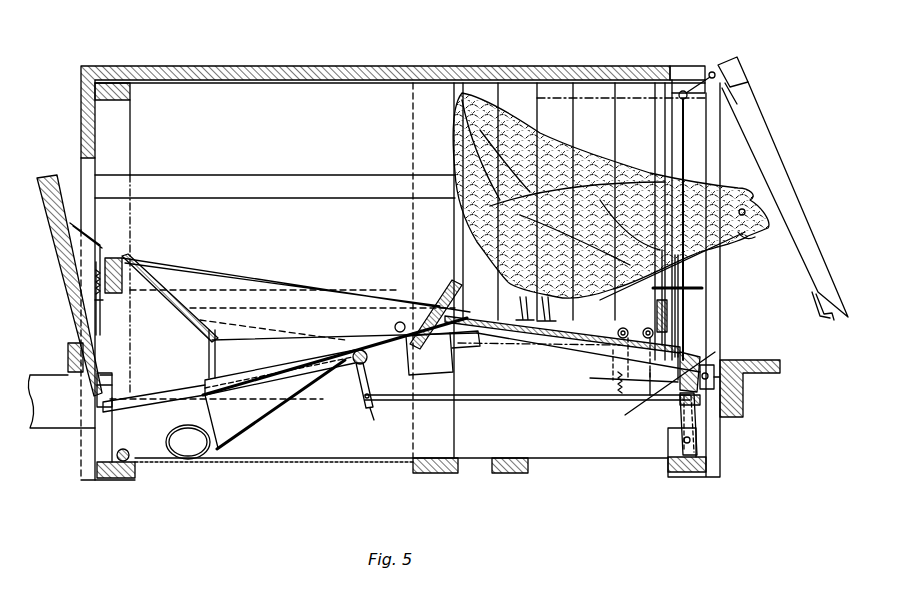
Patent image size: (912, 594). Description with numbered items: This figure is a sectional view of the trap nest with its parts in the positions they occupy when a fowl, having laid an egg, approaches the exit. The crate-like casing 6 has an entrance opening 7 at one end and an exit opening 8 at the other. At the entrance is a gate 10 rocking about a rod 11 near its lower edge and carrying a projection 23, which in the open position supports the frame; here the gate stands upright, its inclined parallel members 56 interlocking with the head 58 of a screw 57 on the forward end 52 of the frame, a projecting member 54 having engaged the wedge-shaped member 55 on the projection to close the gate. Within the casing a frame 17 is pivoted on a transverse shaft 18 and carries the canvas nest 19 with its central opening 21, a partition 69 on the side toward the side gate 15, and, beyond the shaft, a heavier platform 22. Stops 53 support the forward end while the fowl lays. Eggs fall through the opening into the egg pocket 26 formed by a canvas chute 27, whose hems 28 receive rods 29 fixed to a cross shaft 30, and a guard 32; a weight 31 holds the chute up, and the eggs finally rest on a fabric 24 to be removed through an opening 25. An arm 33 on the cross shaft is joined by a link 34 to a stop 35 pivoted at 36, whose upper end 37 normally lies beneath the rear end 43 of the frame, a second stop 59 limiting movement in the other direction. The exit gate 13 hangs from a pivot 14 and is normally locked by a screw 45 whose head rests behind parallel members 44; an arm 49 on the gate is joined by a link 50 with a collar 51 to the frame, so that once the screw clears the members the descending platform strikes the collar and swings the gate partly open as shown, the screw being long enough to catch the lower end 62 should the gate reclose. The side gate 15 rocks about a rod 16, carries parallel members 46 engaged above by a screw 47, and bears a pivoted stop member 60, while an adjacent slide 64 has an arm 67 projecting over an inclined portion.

The casing 6 is at (393, 101).
The entrance opening 7 is at (90, 178).
The exit opening 8 is at (713, 305).
The gate 10 is at (60, 240).
The rod 11 is at (68, 352).
The gate 13 is at (760, 142).
The pivot 14 is at (713, 72).
The gate 15 is at (565, 128).
The horizontal rod 16 is at (522, 76).
The frame 17 is at (590, 380).
The shaft 18 is at (400, 322).
The nest 19 is at (268, 302).
The opening 21 is at (237, 346).
The platform 22 is at (582, 332).
The projection 23 is at (92, 392).
The fabric 24 is at (300, 466).
The opening 25 is at (103, 440).
The egg pocket 26 is at (262, 405).
The chute 27 is at (287, 405).
The hems 28 is at (277, 373).
The rods 29 is at (168, 398).
The cross shaft 30 is at (368, 361).
The weight 31 is at (440, 365).
The guard 32 is at (208, 365).
The arm 33 is at (374, 410).
The rod or link 34 is at (520, 400).
The stop 35 is at (705, 420).
The pivot 36 is at (692, 445).
The upper end of stop 37 is at (712, 372).
The rear end of frame 43 is at (698, 360).
The parallel members 44 is at (818, 316).
The screw 45 is at (744, 395).
The parallel members 46 is at (614, 398).
The screw 47 is at (633, 339).
The arm 49 is at (683, 91).
The link 50 is at (681, 135).
The collar 51 is at (650, 395).
The forward end of frame 52 is at (97, 300).
The stops 53 is at (107, 372).
The projecting member 54 is at (96, 285).
The inclined or wedge-shaped member 55 is at (112, 385).
The parallel members 56 is at (88, 243).
The screw 57 is at (112, 258).
The head of screw 58 is at (92, 268).
The stop 59 is at (683, 410).
The stop member 60 is at (663, 265).
The lower end of gate 62 is at (836, 322).
The slide 64 is at (690, 328).
The arm 67 is at (673, 285).
The partition 69 is at (478, 272).